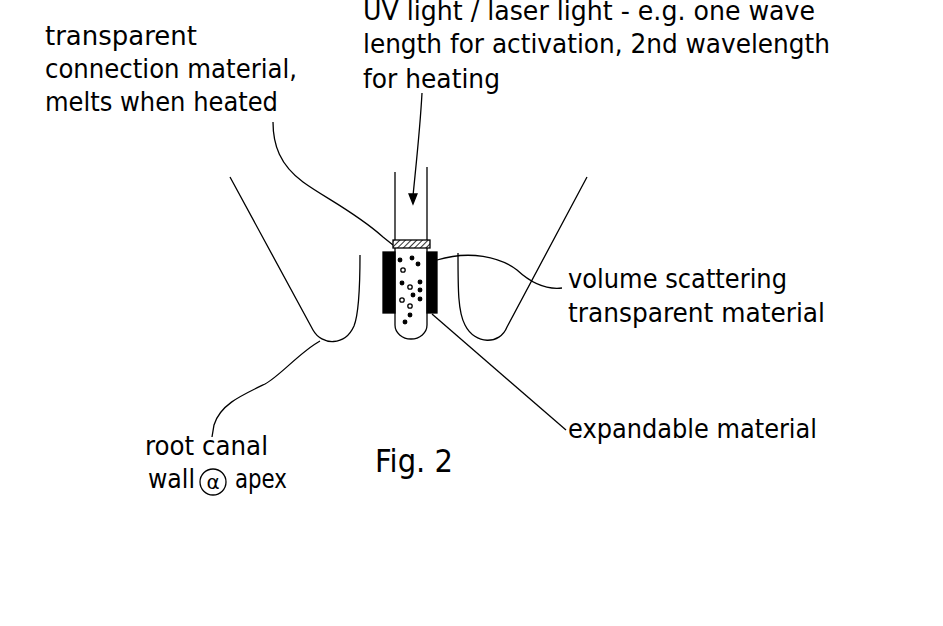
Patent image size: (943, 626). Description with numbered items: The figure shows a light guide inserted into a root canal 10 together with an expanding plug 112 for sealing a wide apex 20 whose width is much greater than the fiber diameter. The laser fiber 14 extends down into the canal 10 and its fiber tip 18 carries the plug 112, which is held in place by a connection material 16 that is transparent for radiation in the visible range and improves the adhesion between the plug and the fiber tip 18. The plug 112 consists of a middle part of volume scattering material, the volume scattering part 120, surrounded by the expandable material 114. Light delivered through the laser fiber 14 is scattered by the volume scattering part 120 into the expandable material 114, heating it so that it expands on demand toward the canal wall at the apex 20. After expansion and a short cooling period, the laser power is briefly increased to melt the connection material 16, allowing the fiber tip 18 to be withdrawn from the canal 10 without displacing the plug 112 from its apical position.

The canal 10 is at (383, 275).
The plug 112 is at (377, 333).
The expandable material 114 is at (383, 273).
The laser fiber 14 is at (416, 219).
The connection material 16 is at (430, 243).
The fiber tip 18 is at (407, 223).
The apex 20 is at (430, 333).
The volume scattering part 120 is at (423, 322).